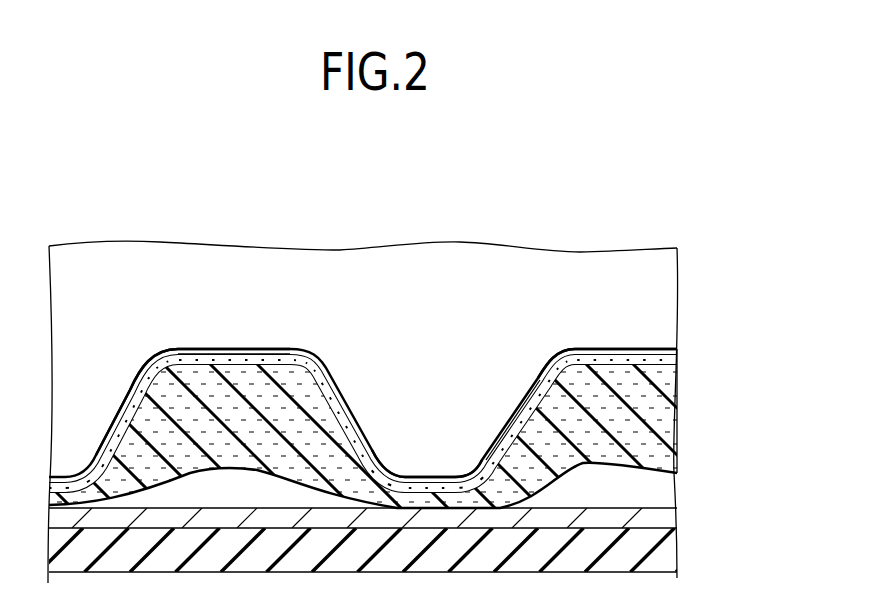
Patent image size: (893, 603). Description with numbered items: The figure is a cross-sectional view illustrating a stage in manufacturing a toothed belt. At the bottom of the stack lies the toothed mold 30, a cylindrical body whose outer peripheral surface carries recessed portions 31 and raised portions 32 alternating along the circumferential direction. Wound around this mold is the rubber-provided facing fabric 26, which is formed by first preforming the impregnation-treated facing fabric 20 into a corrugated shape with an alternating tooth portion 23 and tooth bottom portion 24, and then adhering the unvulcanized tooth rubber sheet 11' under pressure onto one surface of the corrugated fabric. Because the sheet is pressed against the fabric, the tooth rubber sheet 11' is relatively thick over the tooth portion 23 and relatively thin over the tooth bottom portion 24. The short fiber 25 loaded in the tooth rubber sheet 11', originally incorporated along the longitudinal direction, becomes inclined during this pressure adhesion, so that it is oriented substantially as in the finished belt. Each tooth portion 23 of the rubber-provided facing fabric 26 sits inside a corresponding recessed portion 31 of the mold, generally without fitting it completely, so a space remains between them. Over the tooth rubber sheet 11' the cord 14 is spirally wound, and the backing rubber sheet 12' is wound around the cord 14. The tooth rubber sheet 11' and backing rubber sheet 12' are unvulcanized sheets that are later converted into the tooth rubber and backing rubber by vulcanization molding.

The tooth rubber sheet 11' is at (392, 427).
The backing rubber sheet 12' is at (400, 550).
The cord 14 is at (668, 519).
The facing fabric 20 is at (677, 366).
The tooth portion 23 is at (588, 349).
The tooth bottom portion 24 is at (417, 476).
The short fiber 25 is at (157, 350).
The rubber-provided facing fabric 26 is at (762, 349).
The toothed mold 30 is at (402, 334).
The recessed portion 31 is at (228, 352).
The raised portion 32 is at (473, 448).